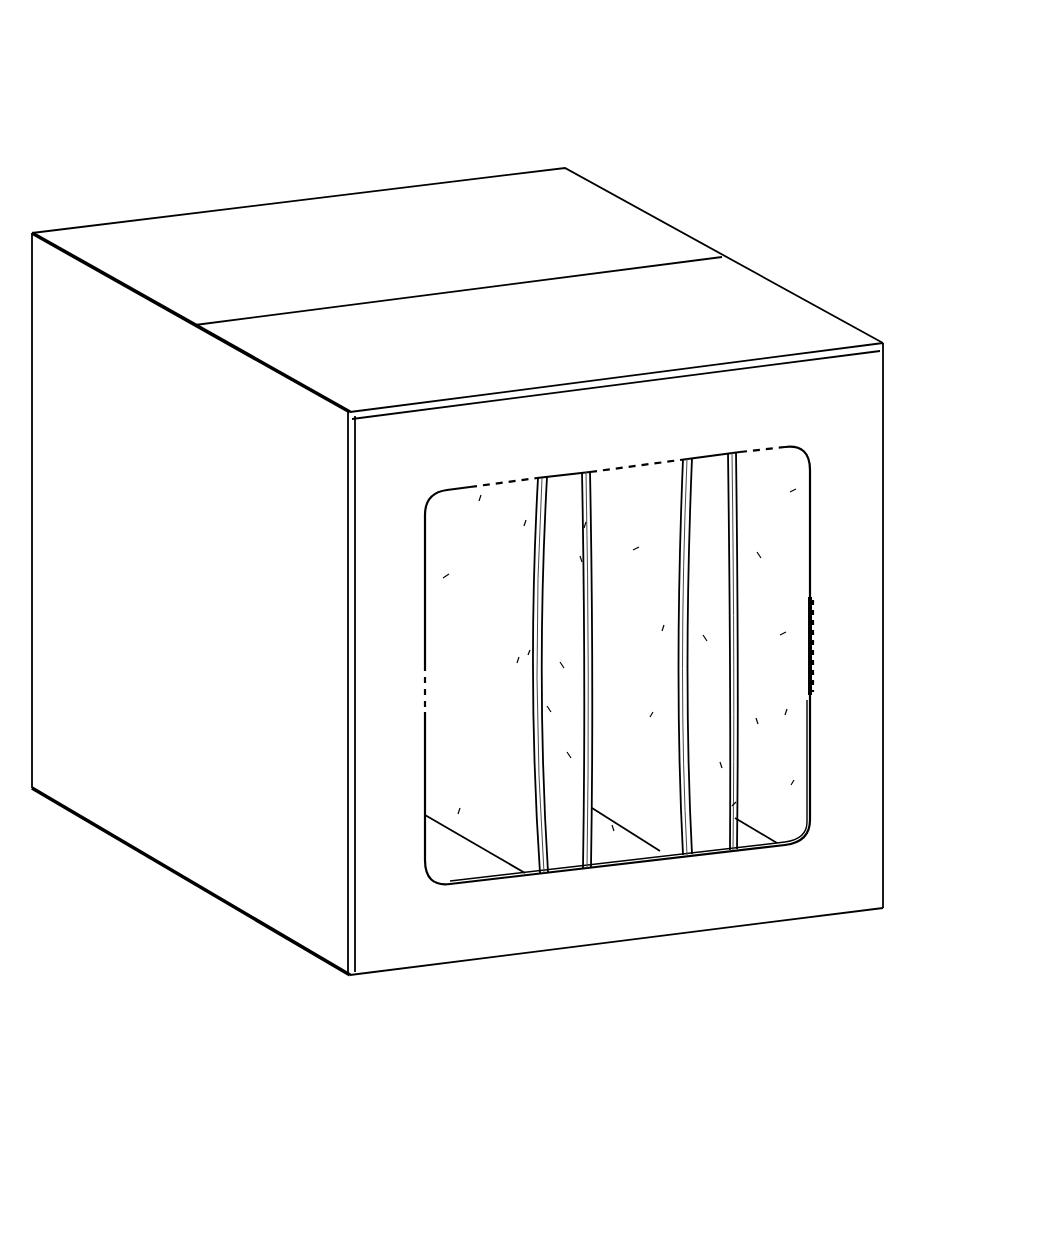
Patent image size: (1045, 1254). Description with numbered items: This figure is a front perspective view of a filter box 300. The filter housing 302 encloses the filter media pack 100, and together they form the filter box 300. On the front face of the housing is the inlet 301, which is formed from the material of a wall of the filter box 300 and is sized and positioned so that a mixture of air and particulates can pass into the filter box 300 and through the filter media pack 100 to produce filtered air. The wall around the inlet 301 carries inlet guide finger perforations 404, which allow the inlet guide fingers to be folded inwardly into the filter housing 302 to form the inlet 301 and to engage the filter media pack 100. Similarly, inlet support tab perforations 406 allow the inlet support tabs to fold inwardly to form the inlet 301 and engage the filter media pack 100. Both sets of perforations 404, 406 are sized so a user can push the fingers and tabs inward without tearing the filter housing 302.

The filter box 300 is at (192, 55).
The filter housing 302 is at (151, 217).
The inlet guide finger perforations 404 is at (498, 483).
The inlet support tab perforations 406 is at (427, 703).
The filter media pack 100 is at (566, 822).
The inlet 301 is at (641, 722).